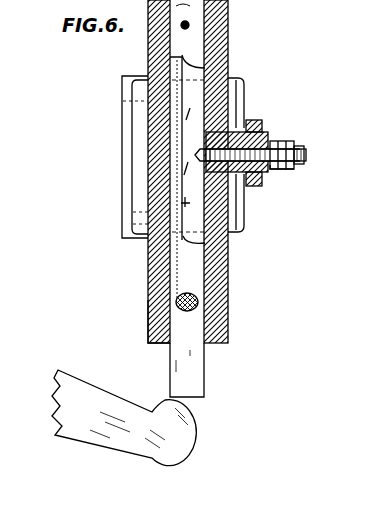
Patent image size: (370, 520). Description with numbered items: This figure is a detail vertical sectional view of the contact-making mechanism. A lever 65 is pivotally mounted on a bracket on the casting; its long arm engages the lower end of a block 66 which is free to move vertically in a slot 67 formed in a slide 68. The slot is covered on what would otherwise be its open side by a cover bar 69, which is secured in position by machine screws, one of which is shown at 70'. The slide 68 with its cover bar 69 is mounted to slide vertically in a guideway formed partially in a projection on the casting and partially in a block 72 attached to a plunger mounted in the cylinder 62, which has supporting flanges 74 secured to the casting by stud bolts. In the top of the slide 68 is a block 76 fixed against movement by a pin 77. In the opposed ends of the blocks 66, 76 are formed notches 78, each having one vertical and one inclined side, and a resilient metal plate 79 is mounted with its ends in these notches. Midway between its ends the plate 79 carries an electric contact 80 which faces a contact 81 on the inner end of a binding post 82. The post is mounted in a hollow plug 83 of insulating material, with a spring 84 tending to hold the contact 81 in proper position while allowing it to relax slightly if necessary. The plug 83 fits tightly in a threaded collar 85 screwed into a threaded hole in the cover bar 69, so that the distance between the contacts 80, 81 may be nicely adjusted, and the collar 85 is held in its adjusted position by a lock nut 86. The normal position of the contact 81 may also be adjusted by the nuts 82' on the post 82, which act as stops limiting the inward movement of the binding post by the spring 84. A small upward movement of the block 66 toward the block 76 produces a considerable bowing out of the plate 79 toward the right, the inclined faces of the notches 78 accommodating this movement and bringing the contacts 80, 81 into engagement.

The cylinder 62 is at (188, 212).
The lever 65 is at (136, 452).
The block 66 is at (203, 368).
The slot 67 is at (150, 312).
The slide 68 is at (150, 272).
The cover bar 69 is at (229, 44).
The pin 70' is at (186, 313).
The block 72 is at (137, 189).
The supporting flanges 74 is at (123, 101).
The block 76 is at (232, 8).
The pin 77 is at (189, 25).
The notches 78 is at (205, 70).
The resilient metal plate 79 is at (187, 177).
The electric contact 80 is at (188, 122).
The contact 81 is at (188, 178).
The binding post 82 is at (300, 155).
The nuts 82' is at (295, 177).
The hollow plug 83 is at (268, 142).
The spring 84 is at (256, 128).
The threaded collar 85 is at (246, 180).
The lock nut 86 is at (241, 128).